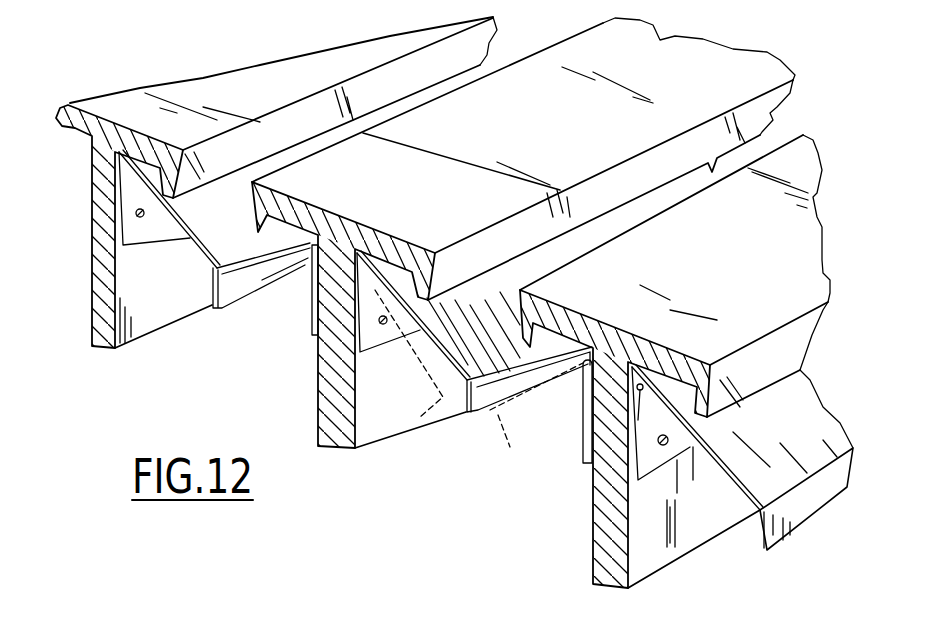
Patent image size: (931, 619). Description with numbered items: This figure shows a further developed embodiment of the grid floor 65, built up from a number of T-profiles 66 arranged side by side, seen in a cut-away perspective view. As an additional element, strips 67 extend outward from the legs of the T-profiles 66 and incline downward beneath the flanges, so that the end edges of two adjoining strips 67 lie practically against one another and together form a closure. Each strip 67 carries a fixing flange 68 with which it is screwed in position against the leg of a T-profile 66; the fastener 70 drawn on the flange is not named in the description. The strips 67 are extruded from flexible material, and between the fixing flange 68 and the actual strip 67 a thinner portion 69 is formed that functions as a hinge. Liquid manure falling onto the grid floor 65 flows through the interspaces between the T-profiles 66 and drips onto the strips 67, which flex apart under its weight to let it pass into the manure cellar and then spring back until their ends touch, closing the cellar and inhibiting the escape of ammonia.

The grid floor 65 is at (58, 354).
The T-profile 66 is at (104, 335).
The strip 67 is at (458, 414).
The fixing flange 68 is at (587, 420).
The thinner portion 69 is at (587, 364).
The screw 70 is at (668, 445).